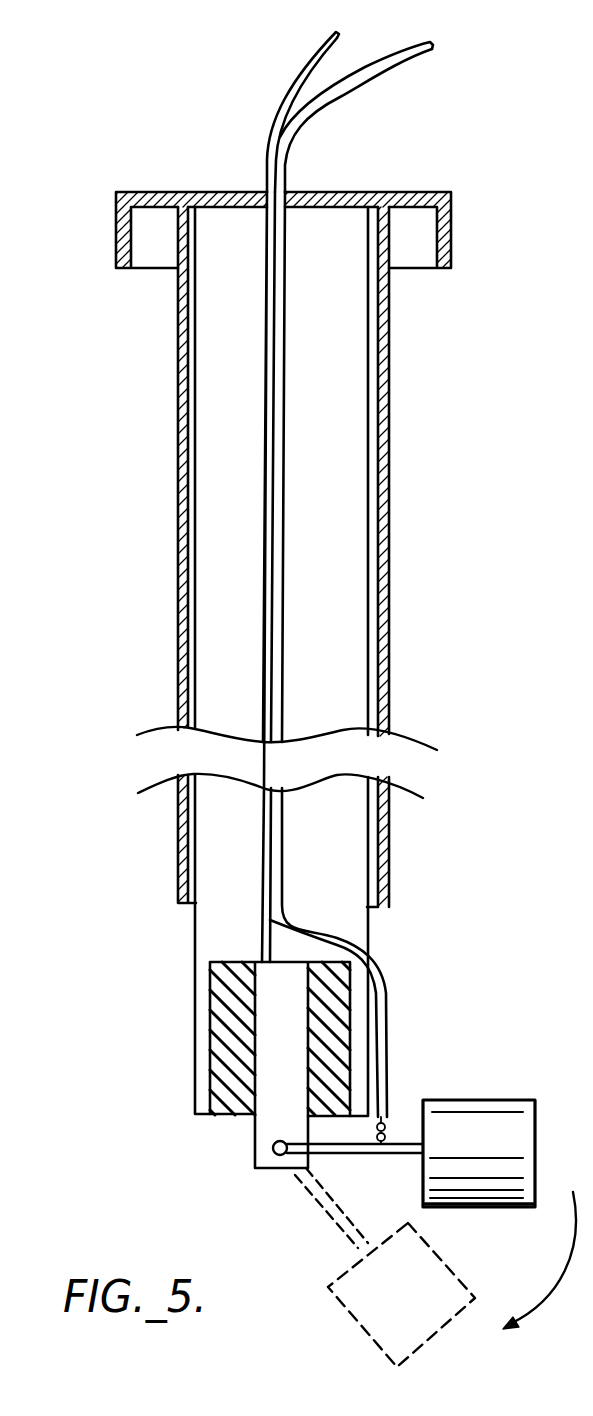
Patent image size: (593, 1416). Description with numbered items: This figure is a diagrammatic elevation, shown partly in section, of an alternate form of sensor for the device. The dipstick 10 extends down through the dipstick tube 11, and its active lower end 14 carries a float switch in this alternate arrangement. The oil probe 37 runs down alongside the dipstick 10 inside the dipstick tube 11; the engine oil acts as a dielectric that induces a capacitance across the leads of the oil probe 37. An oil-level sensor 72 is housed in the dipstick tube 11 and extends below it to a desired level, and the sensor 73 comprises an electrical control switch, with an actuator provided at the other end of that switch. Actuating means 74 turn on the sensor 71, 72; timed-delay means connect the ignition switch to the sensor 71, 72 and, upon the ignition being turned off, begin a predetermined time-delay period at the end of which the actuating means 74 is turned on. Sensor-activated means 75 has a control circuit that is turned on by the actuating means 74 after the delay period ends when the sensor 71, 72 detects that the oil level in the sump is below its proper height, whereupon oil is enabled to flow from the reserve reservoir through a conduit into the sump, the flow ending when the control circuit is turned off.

The dipstick 10 is at (322, 365).
The dipstick tube 11 is at (388, 445).
The lower end 14 is at (251, 1133).
The oil probe 37 is at (277, 637).
The sensor 71 is at (303, 58).
The oil-level sensor 72 is at (382, 70).
The sensor 73 is at (385, 1126).
The actuating means 74 is at (498, 1102).
The sensor-activated means 75 is at (352, 1200).